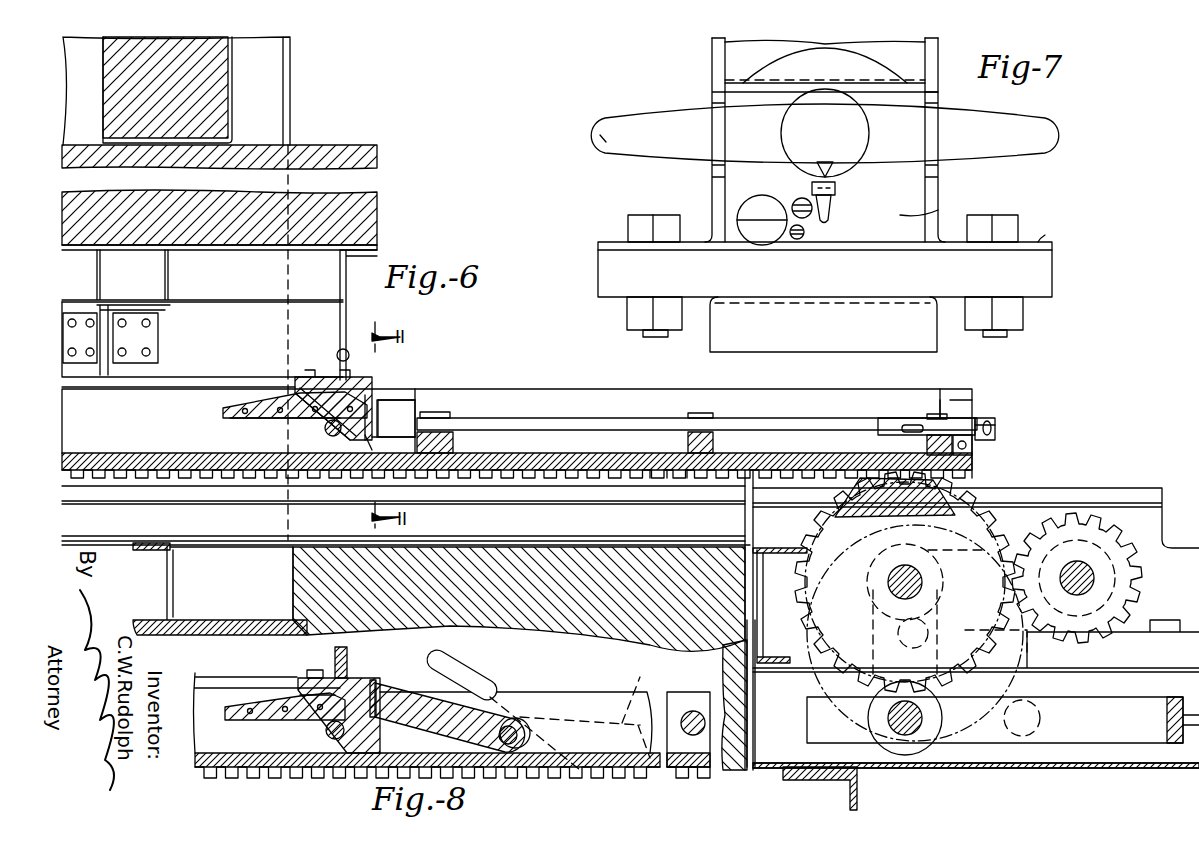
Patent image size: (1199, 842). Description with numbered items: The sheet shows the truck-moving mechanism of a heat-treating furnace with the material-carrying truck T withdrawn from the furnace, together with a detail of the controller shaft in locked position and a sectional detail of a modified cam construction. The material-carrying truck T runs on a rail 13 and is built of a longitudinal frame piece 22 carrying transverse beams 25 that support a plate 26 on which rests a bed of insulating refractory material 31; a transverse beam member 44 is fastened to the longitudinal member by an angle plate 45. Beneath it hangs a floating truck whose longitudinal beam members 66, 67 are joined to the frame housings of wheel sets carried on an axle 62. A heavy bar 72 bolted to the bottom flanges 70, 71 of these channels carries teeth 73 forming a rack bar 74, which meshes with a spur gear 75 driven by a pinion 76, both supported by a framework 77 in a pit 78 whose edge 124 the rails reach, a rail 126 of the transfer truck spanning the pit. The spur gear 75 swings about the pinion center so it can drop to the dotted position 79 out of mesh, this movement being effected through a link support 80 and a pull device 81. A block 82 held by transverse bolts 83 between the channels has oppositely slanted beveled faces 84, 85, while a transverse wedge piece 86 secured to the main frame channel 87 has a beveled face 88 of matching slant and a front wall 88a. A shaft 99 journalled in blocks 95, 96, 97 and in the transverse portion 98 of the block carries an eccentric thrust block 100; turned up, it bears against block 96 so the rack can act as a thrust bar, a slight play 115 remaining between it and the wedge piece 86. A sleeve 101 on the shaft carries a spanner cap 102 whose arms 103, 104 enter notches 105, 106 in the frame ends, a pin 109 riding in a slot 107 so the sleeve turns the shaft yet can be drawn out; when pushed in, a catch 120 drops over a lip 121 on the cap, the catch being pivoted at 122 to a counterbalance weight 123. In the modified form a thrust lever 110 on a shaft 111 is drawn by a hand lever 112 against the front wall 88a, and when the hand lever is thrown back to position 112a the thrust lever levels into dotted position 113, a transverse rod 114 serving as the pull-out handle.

In FIG. 6, the rail 13 is at (587, 493).
In FIG. 6, the longitudinal frame piece 22 is at (245, 310).
In FIG. 6, the transverse beam 25 is at (167, 272).
In FIG. 6, the plate 26 is at (240, 250).
In FIG. 6, the insulating refractory material 31 is at (350, 168).
In FIG. 6, the transverse beam member 44 is at (104, 378).
In FIG. 6, the angle plate 45 is at (158, 335).
In FIG. 6, the axle 62 is at (333, 436).
In FIG. 6, the longitudinal beam member 66 is at (828, 392).
In FIG. 7, the longitudinal beam member 66 is at (938, 190).
In FIG. 8, the longitudinal beam member 66 is at (583, 692).
In FIG. 7, the longitudinal beam member 67 is at (712, 188).
In FIG. 7, the bottom flange 70 is at (1038, 240).
In FIG. 7, the bottom flange 71 is at (608, 240).
In FIG. 6, the heavy bar 72 is at (553, 453).
In FIG. 7, the heavy bar 72 is at (1035, 277).
In FIG. 8, the heavy bar 72 is at (222, 770).
In FIG. 6, the teeth 73 is at (687, 478).
In FIG. 7, the teeth 73 is at (975, 330).
In FIG. 6, the rack bar 74 is at (972, 462).
In FIG. 6, the spur gear 75 is at (975, 530).
In FIG. 6, the pinion 76 is at (1140, 585).
In FIG. 6, the framework 77 is at (1015, 768).
In FIG. 8, the pit 78 is at (725, 670).
In FIG. 6, the dotted line position 79 is at (1000, 685).
In FIG. 6, the link support 80 is at (868, 718).
In FIG. 6, the pull device 81 is at (1175, 697).
In FIG. 6, the block 82 is at (298, 418).
In FIG. 6, the transverse bolts 83 is at (240, 418).
In FIG. 6, the beveled face 84 is at (232, 400).
In FIG. 8, the beveled face 84 is at (250, 707).
In FIG. 6, the beveled face 85 is at (330, 414).
In FIG. 8, the beveled face 85 is at (330, 740).
In FIG. 6, the transverse wedge piece 86 is at (380, 400).
In FIG. 7, the transverse wedge piece 86 is at (730, 44).
In FIG. 8, the transverse wedge piece 86 is at (295, 705).
In FIG. 6, the main frame channel 87 is at (340, 275).
In FIG. 8, the main frame channel 87 is at (336, 660).
In FIG. 6, the beveled face 88 is at (300, 385).
In FIG. 8, the beveled face 88 is at (365, 678).
In FIG. 8, the front wall 88a is at (375, 685).
In FIG. 6, the block 95 is at (688, 441).
In FIG. 6, the block 96 is at (453, 441).
In FIG. 6, the block 97 is at (927, 443).
In FIG. 7, the block 97 is at (960, 210).
In FIG. 6, the transverse portion 98 is at (366, 440).
In FIG. 6, the shaft 99 is at (755, 420).
In FIG. 6, the thrust block 100 is at (410, 400).
In FIG. 7, the thrust block 100 is at (752, 76).
In FIG. 6, the sleeve 101 is at (885, 418).
In FIG. 6, the spanner cap 102 is at (985, 420).
In FIG. 7, the spanner cap 102 is at (828, 95).
In FIG. 7, the arm 103 is at (1040, 120).
In FIG. 6, the arm 104 is at (995, 428).
In FIG. 7, the arm 104 is at (605, 128).
In FIG. 6, the notch 105 is at (963, 408).
In FIG. 7, the notch 105 is at (940, 100).
In FIG. 7, the notch 106 is at (712, 97).
In FIG. 6, the slot 107 is at (930, 414).
In FIG. 6, the pin 109 is at (905, 425).
In FIG. 8, the thrust lever 110 is at (405, 690).
In FIG. 8, the shaft 111 is at (510, 725).
In FIG. 8, the hand lever 112 is at (455, 675).
In FIG. 8, the dotted line position 112a is at (580, 786).
In FIG. 8, the dotted line position 113 is at (637, 678).
In FIG. 8, the transverse rod 114 is at (695, 735).
In FIG. 6, the play 115 is at (395, 400).
In FIG. 6, the catch 120 is at (975, 445).
In FIG. 7, the catch 120 is at (831, 205).
In FIG. 6, the lip 121 is at (995, 432).
In FIG. 7, the lip 121 is at (848, 175).
In FIG. 7, the pivot 122 is at (795, 200).
In FIG. 7, the counterbalance weight 123 is at (745, 212).
In FIG. 6, the edge of pit 124 is at (757, 605).
In FIG. 6, the rail 126 is at (770, 520).
In FIG. 6, the material-carrying truck T is at (1104, 482).